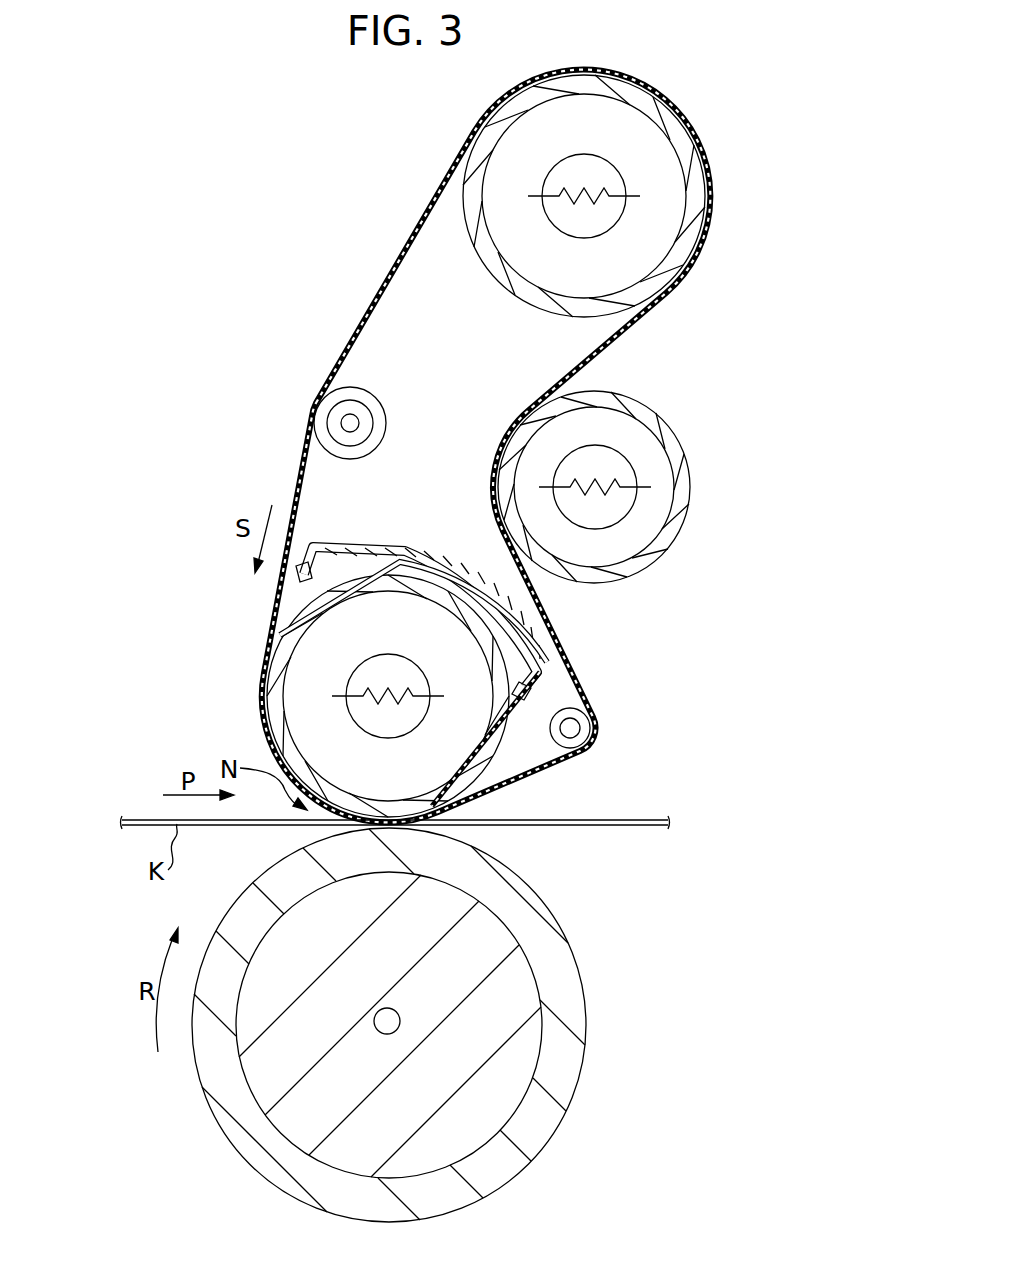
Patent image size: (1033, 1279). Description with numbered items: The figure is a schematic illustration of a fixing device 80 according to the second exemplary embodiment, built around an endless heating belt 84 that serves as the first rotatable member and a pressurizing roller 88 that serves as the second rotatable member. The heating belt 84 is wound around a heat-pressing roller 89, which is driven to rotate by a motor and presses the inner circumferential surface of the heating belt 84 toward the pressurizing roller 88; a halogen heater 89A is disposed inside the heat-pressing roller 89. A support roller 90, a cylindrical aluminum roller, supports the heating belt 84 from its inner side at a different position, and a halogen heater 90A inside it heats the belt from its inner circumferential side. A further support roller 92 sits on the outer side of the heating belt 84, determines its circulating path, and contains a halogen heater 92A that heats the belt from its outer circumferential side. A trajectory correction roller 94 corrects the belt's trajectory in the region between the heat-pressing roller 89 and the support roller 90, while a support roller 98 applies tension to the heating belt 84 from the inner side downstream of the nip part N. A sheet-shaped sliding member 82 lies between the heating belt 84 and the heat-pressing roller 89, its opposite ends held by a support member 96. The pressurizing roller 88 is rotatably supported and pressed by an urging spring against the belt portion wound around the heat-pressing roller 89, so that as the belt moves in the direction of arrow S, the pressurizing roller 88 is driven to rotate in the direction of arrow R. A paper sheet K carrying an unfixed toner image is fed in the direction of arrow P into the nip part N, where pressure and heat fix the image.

The fixing device 80 is at (212, 108).
The sliding member 82 is at (510, 732).
The heating belt 84 is at (404, 250).
The pressurizing roller 88 is at (605, 1012).
The heat-pressing roller 89 is at (400, 585).
The halogen heater 89A is at (387, 652).
The support roller 90 is at (478, 236).
The halogen heater 90A is at (585, 240).
The support roller 92 is at (664, 420).
The halogen heater 92A is at (616, 526).
The trajectory correction roller 94 is at (385, 408).
The support member 96 is at (527, 630).
The support roller 98 is at (586, 720).